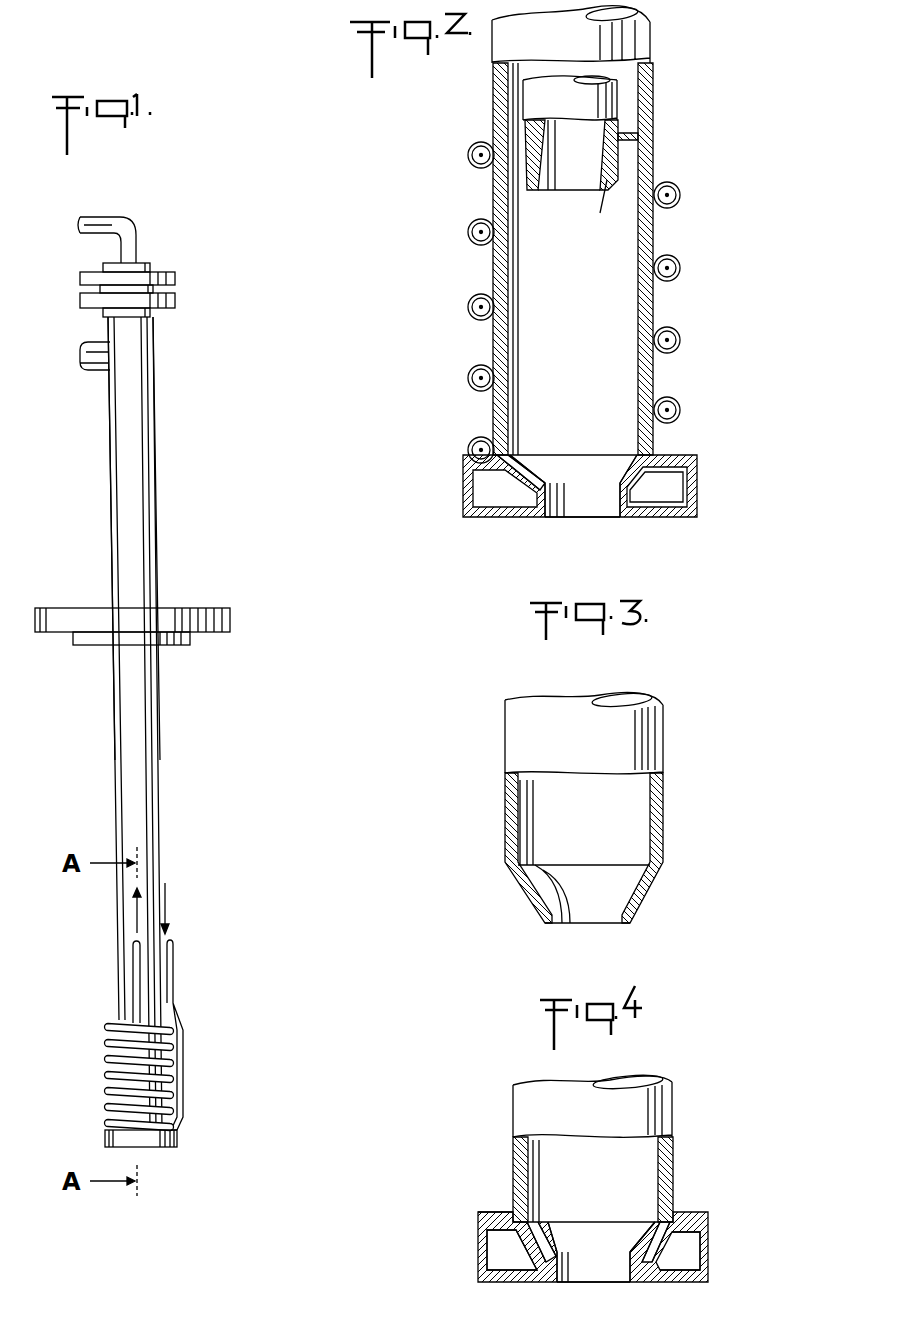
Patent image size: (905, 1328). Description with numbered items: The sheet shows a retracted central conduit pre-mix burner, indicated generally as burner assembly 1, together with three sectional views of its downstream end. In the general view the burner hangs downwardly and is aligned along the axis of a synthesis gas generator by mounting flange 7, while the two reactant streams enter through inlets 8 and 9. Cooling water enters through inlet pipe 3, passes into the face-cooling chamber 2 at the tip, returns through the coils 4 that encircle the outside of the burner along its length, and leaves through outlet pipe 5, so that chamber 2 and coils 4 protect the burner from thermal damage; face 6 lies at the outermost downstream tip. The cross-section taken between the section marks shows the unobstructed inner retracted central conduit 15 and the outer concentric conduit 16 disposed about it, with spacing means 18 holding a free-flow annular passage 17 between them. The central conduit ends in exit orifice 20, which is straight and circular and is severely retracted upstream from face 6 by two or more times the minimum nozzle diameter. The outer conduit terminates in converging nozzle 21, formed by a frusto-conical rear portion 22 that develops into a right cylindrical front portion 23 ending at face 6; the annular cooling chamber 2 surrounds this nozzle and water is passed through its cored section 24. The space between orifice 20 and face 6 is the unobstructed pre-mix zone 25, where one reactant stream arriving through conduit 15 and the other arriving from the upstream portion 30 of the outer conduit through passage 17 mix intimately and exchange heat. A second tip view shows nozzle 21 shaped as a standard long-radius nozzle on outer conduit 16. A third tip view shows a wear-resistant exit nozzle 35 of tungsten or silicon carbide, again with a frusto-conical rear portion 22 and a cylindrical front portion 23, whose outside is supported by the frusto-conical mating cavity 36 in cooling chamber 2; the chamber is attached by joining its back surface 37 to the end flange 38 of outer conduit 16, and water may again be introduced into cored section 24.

In FIG. 1, the burner assembly 1 is at (150, 752).
In FIG. 1, the face-cooling chamber 2 is at (178, 1136).
In FIG. 2, the face-cooling chamber 2 is at (697, 495).
In FIG. 4, the face-cooling chamber 2 is at (708, 1260).
In FIG. 1, the inlet pipe 3 is at (173, 970).
In FIG. 1, the cooling coils 4 is at (108, 1075).
In FIG. 2, the cooling coils 4 is at (470, 380).
In FIG. 1, the outlet pipe 5 is at (133, 962).
In FIG. 1, the face 6 is at (165, 1148).
In FIG. 2, the face 6 is at (625, 512).
In FIG. 4, the face 6 is at (594, 1282).
In FIG. 1, the mounting flange 7 is at (178, 613).
In FIG. 1, the inlet 8 is at (71, 355).
In FIG. 1, the inlet 9 is at (75, 230).
In FIG. 1, the central conduit 15 is at (136, 262).
In FIG. 2, the central conduit 15 is at (527, 128).
In FIG. 1, the outer conduit 16 is at (151, 334).
In FIG. 2, the outer conduit 16 is at (495, 188).
In FIG. 3, the outer conduit 16 is at (505, 735).
In FIG. 4, the outer conduit 16 is at (513, 1107).
In FIG. 2, the annular passage 17 is at (628, 122).
In FIG. 2, the spacing means 18 is at (640, 170).
In FIG. 2, the exit orifice 20 is at (608, 195).
In FIG. 2, the converging nozzle 21 is at (585, 470).
In FIG. 3, the converging nozzle 21 is at (553, 885).
In FIG. 4, the converging nozzle 21 is at (567, 1232).
In FIG. 2, the frusto-conical rear portion 22 is at (530, 473).
In FIG. 4, the frusto-conical rear portion 22 is at (640, 1228).
In FIG. 2, the right cylindrical front portion 23 is at (570, 507).
In FIG. 4, the right cylindrical front portion 23 is at (573, 1270).
In FIG. 2, the cored section 24 is at (665, 495).
In FIG. 4, the cored section 24 is at (683, 1240).
In FIG. 2, the pre-mix zone 25 is at (614, 346).
In FIG. 2, the upstream portion 30 is at (632, 42).
In FIG. 4, the exit nozzle 35 is at (537, 1240).
In FIG. 4, the frusto-conical mating cavity 36 is at (660, 1262).
In FIG. 4, the back surface 37 is at (517, 1228).
In FIG. 4, the end flange 38 is at (487, 1212).